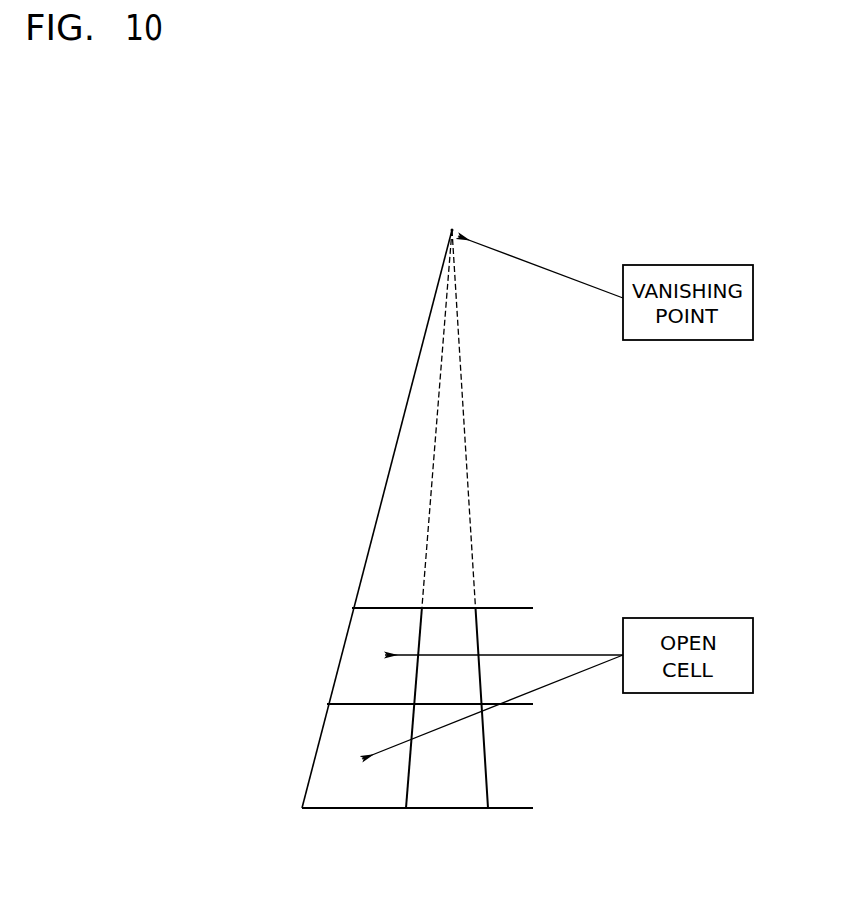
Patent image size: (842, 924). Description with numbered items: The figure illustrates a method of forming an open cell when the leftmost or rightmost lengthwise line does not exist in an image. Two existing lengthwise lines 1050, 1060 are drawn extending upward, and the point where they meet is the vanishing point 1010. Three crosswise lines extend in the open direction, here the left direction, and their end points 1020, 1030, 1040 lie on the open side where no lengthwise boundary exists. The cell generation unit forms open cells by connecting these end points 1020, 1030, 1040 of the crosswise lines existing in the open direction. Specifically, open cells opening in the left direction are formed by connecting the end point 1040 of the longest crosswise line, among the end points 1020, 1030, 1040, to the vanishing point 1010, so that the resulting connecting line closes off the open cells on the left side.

The vanishing point 1010 is at (452, 230).
The end point of crosswise line 1020 is at (352, 608).
The end point of crosswise line 1030 is at (327, 704).
The end point of longest crosswise line 1040 is at (302, 808).
The lengthwise line 1050 is at (407, 795).
The lengthwise line 1060 is at (487, 795).